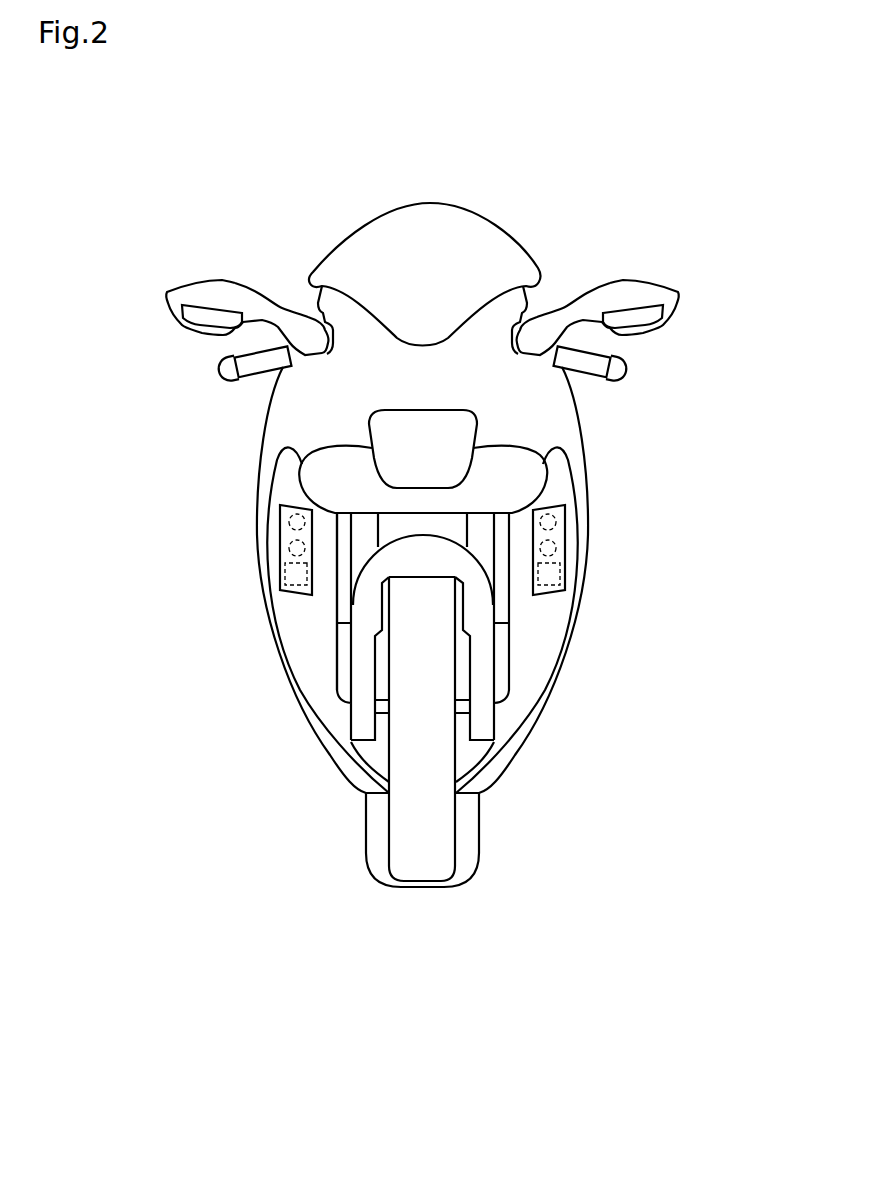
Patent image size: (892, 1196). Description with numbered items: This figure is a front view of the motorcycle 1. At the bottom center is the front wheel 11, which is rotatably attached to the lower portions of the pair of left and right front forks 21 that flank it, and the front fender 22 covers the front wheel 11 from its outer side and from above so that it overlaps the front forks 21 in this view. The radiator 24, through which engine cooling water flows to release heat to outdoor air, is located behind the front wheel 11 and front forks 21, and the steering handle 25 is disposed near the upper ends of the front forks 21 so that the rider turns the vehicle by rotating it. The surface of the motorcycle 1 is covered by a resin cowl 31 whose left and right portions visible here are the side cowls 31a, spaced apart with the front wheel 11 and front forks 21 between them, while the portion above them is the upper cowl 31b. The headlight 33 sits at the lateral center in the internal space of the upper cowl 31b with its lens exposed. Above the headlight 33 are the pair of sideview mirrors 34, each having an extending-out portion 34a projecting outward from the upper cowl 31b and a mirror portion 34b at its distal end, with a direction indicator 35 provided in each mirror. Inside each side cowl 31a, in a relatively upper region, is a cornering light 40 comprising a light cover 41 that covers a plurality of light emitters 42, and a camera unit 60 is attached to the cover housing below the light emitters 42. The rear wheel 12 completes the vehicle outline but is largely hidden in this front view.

The motorcycle 1 is at (106, 172).
The front wheel 11 is at (425, 868).
The rear wheel 12 is at (467, 823).
The front forks 21 is at (360, 537).
The front fender 22 is at (376, 581).
The radiator 24 is at (343, 605).
The steering handle 25 is at (593, 367).
The cowl 31 is at (743, 455).
The side cowls 31a is at (574, 495).
The upper cowl 31b is at (580, 432).
The headlight 33 is at (420, 455).
The sideview mirrors 34 is at (687, 182).
The extending-out portion 34a is at (567, 320).
The mirror portion 34b is at (643, 293).
The direction indicators 35 is at (642, 318).
The cornering light 40 is at (551, 601).
The light cover 41 is at (531, 560).
The light emitters 42 is at (558, 524).
The camera unit 60 is at (560, 573).